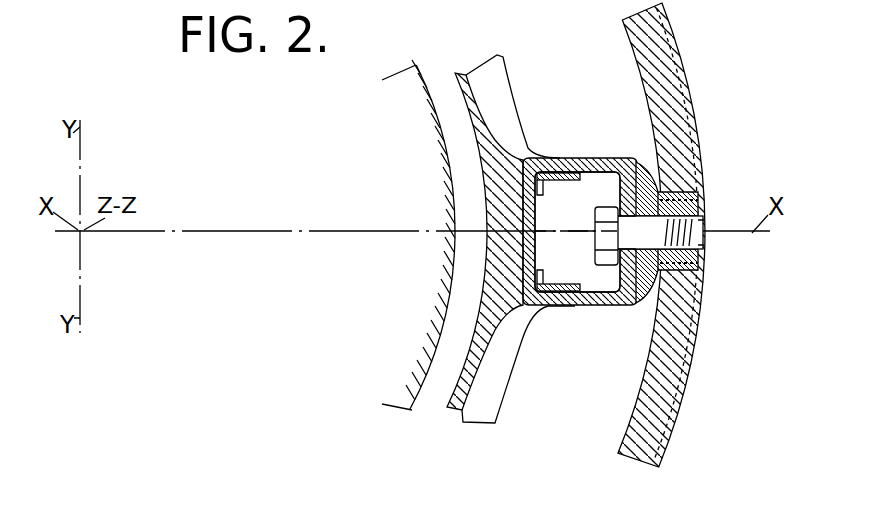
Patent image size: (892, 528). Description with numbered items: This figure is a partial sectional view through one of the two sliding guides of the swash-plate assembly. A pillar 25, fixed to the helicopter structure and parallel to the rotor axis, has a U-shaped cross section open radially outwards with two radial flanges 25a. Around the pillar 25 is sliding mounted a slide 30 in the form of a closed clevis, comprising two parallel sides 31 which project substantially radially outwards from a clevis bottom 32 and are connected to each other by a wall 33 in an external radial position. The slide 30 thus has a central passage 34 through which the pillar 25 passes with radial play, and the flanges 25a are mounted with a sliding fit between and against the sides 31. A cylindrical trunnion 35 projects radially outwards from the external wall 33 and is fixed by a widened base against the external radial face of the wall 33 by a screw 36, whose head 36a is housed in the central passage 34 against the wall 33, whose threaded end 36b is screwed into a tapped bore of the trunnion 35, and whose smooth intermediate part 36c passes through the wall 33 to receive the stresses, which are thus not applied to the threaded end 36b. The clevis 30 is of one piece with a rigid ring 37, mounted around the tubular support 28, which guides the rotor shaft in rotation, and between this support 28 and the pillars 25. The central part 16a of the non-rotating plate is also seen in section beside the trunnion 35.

The central part of the non-rotating plate 16a is at (650, 437).
The pillar 25 is at (545, 172).
The radial flange 25a is at (552, 300).
The tubular support 28 is at (400, 407).
The slide 30 is at (694, 173).
The side 31 is at (597, 160).
The clevis bottom 32 is at (505, 200).
The wall 33 is at (650, 178).
The central passage 34 is at (553, 213).
The trunnion 35 is at (672, 208).
The screw 36 is at (567, 291).
The head 36a is at (603, 238).
The threaded end 36b is at (702, 265).
The smooth intermediate part 36c is at (626, 293).
The rigid ring 37 is at (477, 390).